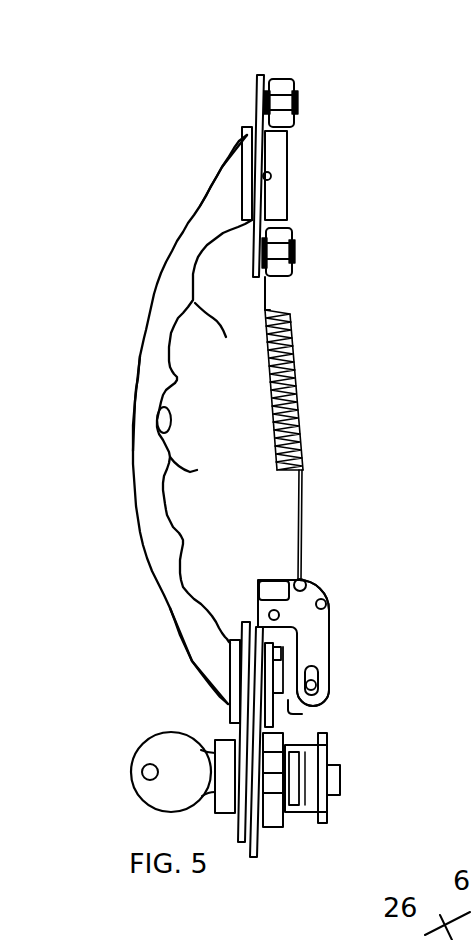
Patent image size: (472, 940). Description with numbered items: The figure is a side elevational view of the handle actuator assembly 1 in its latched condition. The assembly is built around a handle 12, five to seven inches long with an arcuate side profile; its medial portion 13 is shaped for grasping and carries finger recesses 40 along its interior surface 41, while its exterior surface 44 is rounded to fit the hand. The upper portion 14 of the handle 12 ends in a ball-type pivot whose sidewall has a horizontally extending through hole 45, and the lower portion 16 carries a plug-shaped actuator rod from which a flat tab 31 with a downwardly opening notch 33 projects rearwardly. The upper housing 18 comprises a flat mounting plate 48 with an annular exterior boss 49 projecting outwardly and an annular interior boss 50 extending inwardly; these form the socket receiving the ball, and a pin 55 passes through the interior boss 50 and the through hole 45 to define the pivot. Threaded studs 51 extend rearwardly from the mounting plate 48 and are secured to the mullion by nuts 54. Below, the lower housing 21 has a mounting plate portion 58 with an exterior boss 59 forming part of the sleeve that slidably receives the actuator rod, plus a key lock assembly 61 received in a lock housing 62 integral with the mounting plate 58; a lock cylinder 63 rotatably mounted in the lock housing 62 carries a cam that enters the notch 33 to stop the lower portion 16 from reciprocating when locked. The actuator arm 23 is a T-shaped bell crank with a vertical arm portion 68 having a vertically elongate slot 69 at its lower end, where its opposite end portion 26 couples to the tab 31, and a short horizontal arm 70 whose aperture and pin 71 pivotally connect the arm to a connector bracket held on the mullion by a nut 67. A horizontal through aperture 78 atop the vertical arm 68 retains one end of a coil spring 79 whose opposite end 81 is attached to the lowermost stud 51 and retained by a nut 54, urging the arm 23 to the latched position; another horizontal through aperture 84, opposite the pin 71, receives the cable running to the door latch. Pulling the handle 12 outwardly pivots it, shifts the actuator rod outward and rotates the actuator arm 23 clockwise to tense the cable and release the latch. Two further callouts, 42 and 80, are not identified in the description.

The handle actuator assembly 1 is at (236, 66).
The handle 12 is at (146, 271).
The medial portion 13 is at (148, 380).
The upper portion 14 is at (218, 170).
The lower portion 16 is at (212, 690).
The upper housing 18 is at (263, 74).
The lower housing 21 is at (240, 845).
The actuator arm 23 is at (333, 607).
The opposite end portion 26 is at (325, 716).
The tab 31 is at (328, 697).
The notch 33 is at (299, 714).
The finger recesses 40 is at (158, 435).
The interior surface 41 is at (197, 470).
The inner handle wall 42 is at (147, 317).
The exterior surface 44 is at (219, 334).
The through hole 45 is at (289, 153).
The mounting plate 48 is at (258, 103).
The annular exterior boss 49 is at (245, 140).
The annular interior boss 50 is at (289, 205).
The threaded studs 51 is at (300, 97).
The nuts 54 is at (293, 264).
The pin 55 is at (271, 177).
The mounting plate portion 58 is at (240, 640).
The exterior boss 59 is at (228, 710).
The key lock assembly 61 is at (140, 747).
The lock housing 62 is at (218, 815).
The lock cylinder 63 is at (306, 822).
The nut 67 is at (276, 832).
The vertical arm portion 68 is at (322, 633).
The vertically elongate slot 69 is at (318, 672).
The short horizontal arm 70 is at (273, 577).
The aperture and pin 71 is at (268, 612).
The horizontal through aperture 78 is at (305, 576).
The coil spring 79 is at (300, 386).
The pin 80 is at (298, 577).
The opposite end 81 is at (265, 282).
The horizontal through aperture 84 is at (332, 590).